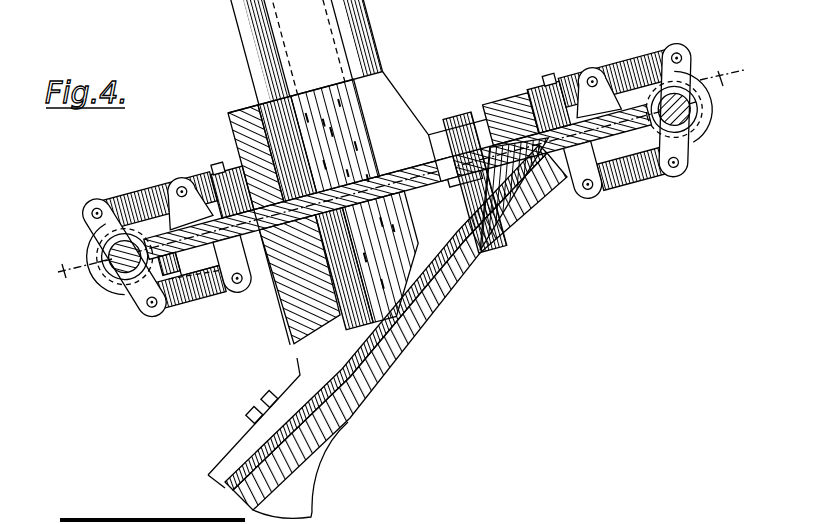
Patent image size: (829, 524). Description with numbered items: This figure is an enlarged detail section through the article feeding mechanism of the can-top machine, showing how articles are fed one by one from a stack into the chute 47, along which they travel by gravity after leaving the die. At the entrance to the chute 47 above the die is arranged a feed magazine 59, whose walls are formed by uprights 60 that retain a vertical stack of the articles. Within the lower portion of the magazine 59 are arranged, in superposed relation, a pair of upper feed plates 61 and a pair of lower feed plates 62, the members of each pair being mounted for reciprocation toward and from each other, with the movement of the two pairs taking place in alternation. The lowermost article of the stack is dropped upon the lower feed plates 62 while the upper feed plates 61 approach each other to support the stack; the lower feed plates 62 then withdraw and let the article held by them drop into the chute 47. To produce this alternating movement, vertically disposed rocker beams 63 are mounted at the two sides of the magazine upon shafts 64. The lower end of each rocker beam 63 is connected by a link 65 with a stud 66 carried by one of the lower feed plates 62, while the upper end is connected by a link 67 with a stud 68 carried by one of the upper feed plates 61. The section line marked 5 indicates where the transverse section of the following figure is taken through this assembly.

The section line 5- 5 is at (392, 169).
The chute 47 is at (328, 420).
The feed magazine 59 is at (400, 103).
The uprights 60 is at (323, 25).
The upper feed plates 61 is at (246, 187).
The lower feed plates 62 is at (221, 250).
The rocker beams 63 is at (146, 294).
The shafts 64 is at (118, 276).
The link 65 is at (176, 306).
The stud 66 is at (250, 284).
The link 67 is at (150, 192).
The stud 68 is at (183, 178).